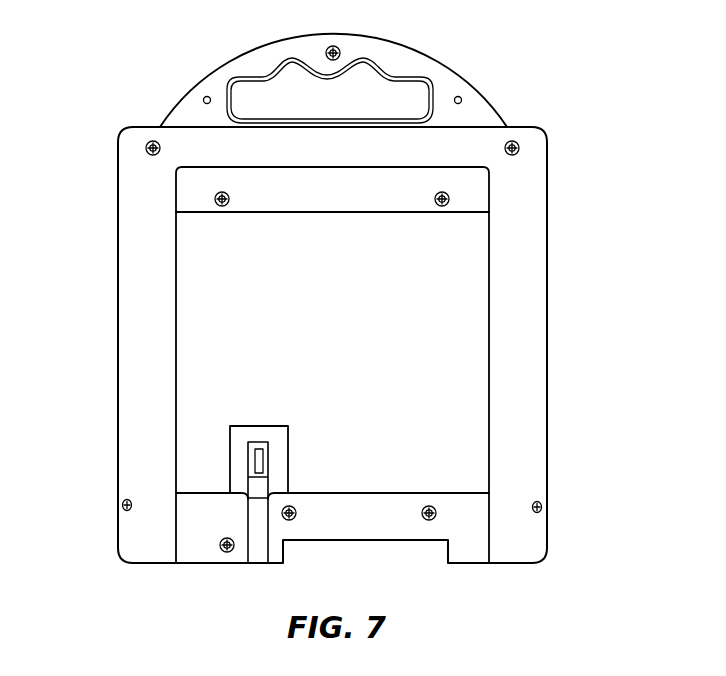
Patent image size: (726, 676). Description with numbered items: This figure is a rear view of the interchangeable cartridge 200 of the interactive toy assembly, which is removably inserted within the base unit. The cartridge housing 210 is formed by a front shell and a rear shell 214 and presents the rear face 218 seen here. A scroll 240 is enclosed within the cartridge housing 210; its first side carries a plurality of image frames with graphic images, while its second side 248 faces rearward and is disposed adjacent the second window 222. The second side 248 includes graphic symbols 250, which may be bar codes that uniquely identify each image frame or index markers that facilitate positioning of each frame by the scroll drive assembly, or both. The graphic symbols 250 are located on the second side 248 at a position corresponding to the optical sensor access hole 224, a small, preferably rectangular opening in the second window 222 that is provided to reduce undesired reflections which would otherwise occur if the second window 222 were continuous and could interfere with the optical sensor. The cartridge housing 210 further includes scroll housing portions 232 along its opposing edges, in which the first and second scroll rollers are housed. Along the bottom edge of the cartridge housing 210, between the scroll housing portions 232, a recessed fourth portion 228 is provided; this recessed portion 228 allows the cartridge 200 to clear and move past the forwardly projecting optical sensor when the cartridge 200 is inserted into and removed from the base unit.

The interchangeable cartridge 200 is at (488, 53).
The cartridge housing 210 is at (483, 98).
The rear face 218 is at (222, 160).
The rear shell 214 is at (485, 160).
The second window 222 is at (460, 252).
The scroll 240 is at (320, 283).
The second side 248 is at (460, 334).
The scroll housing portions 232 is at (127, 325).
The graphic symbols 250 is at (269, 445).
The optical sensor access hole 224 is at (258, 472).
The recessed fourth portion 228 is at (257, 548).